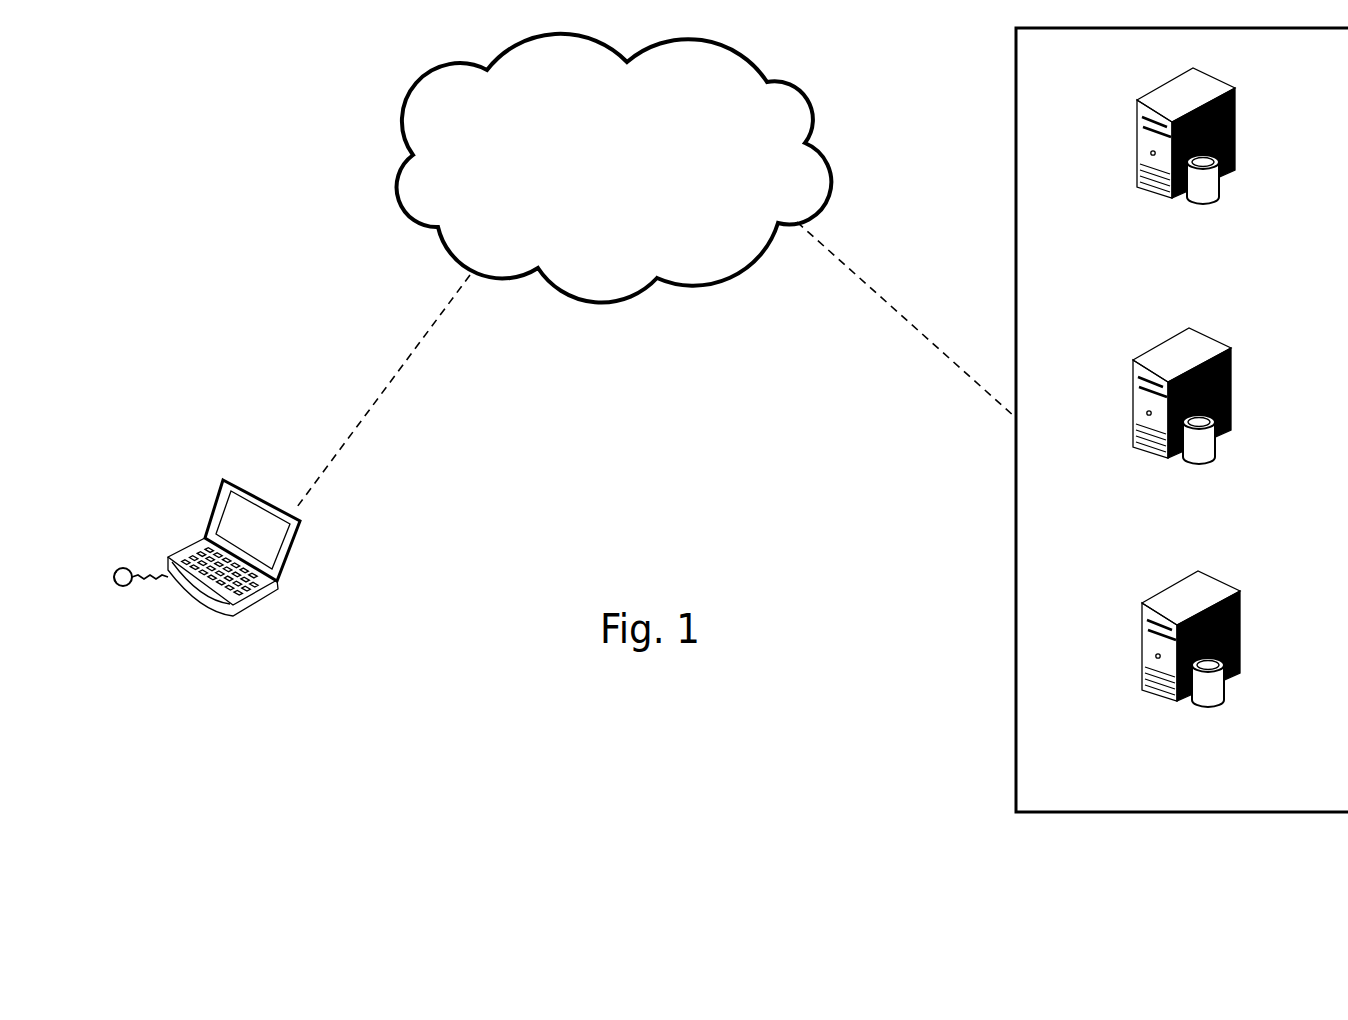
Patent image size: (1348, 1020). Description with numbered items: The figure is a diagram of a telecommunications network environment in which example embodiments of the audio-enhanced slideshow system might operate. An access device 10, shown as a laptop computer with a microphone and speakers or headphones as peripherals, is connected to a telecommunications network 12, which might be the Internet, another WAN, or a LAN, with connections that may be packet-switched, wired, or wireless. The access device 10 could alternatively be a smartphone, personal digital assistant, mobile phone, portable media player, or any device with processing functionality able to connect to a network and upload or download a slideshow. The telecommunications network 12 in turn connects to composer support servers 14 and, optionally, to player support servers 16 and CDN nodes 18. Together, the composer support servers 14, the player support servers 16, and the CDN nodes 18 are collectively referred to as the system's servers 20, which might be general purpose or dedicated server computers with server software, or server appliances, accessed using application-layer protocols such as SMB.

The access device 10 is at (288, 561).
The telecommunications network 12 is at (813, 102).
The composer support servers 14 is at (1235, 113).
The player support servers 16 is at (1230, 373).
The CDN nodes 18 is at (1240, 617).
The servers 20 is at (1016, 637).